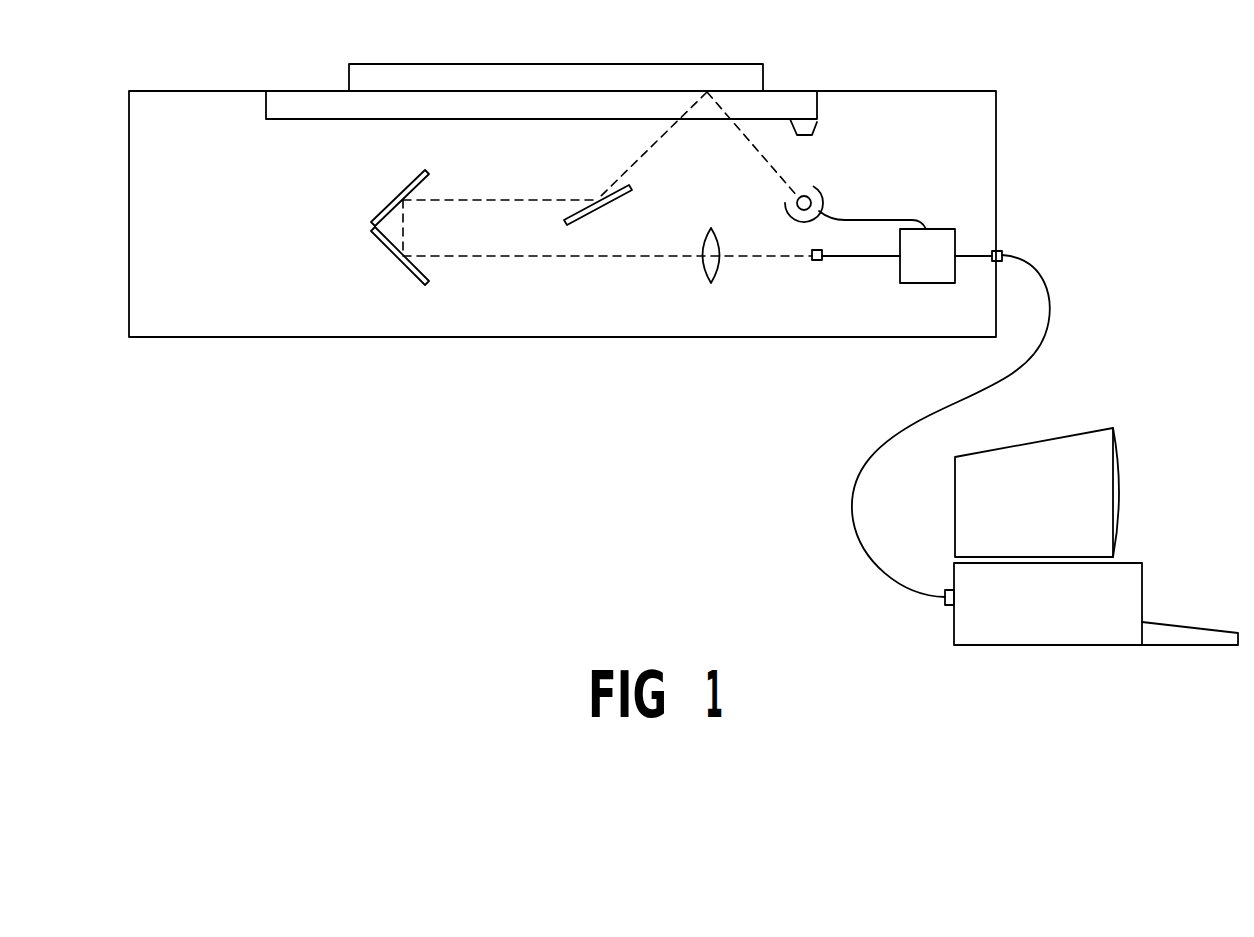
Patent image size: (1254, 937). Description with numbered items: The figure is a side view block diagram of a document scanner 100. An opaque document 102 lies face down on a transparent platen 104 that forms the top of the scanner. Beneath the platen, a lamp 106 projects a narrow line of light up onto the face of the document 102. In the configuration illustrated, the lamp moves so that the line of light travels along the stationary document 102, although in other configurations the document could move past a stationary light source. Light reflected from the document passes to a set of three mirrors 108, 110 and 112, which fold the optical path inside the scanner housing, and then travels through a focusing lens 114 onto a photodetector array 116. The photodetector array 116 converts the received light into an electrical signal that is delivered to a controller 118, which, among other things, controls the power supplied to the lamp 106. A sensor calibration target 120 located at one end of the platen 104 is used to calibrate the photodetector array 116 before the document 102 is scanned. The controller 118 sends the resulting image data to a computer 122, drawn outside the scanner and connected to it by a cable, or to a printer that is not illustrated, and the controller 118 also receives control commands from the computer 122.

The document scanner 100 is at (230, 308).
The opaque document 102 is at (430, 63).
The transparent platen 104 is at (295, 90).
The lamp 106 is at (816, 191).
The mirror 108 is at (621, 196).
The mirror 110 is at (395, 196).
The mirror 112 is at (395, 261).
The focusing lens 114 is at (715, 273).
The photodetector array 116 is at (817, 260).
The controller 118 is at (910, 283).
The sensor calibration target 120 is at (817, 128).
The computer 122 is at (1072, 612).